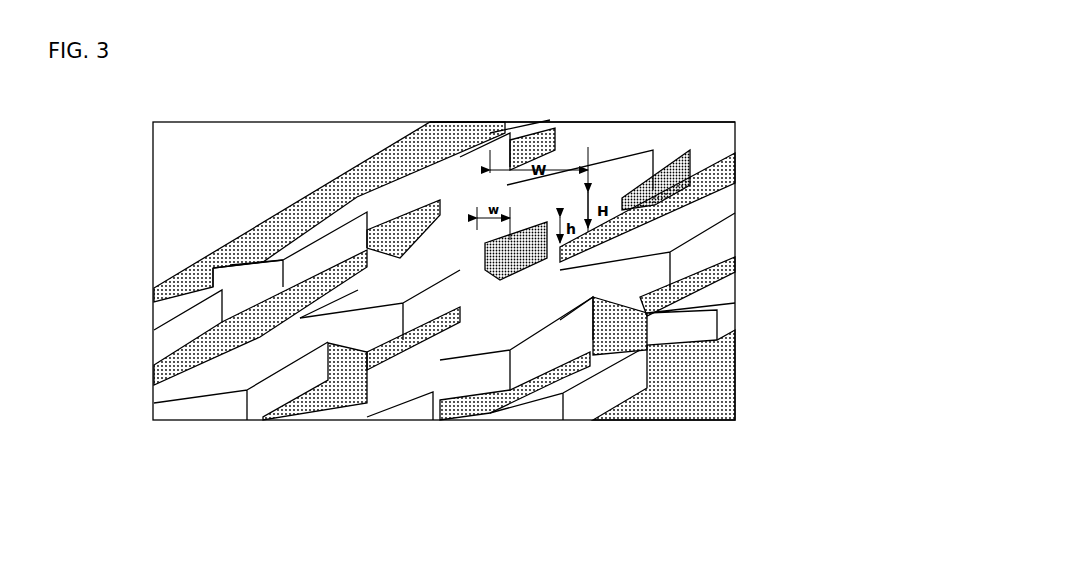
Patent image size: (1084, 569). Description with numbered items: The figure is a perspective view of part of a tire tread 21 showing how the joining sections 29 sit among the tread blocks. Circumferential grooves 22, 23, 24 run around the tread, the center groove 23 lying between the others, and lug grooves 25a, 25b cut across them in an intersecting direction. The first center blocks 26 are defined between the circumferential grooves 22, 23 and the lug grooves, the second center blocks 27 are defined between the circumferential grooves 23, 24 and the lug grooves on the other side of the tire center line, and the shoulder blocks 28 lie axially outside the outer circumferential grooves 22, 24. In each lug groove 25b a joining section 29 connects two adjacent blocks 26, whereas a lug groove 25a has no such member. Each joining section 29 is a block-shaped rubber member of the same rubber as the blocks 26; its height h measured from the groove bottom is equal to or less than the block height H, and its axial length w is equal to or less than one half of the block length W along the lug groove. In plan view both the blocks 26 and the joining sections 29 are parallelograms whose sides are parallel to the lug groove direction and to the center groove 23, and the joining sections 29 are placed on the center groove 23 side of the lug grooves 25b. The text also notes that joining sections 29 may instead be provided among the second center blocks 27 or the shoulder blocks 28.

The tire tread 21 is at (715, 383).
The circumferential groove 22 is at (596, 121).
The center groove 23 is at (691, 178).
The circumferential groove 24 is at (718, 264).
The lug groove 25a is at (354, 349).
The lug groove 25b is at (409, 244).
The first center block 26 is at (432, 180).
The second center block 27 is at (700, 184).
The shoulder block 28 is at (718, 292).
The joining section 29 is at (651, 155).